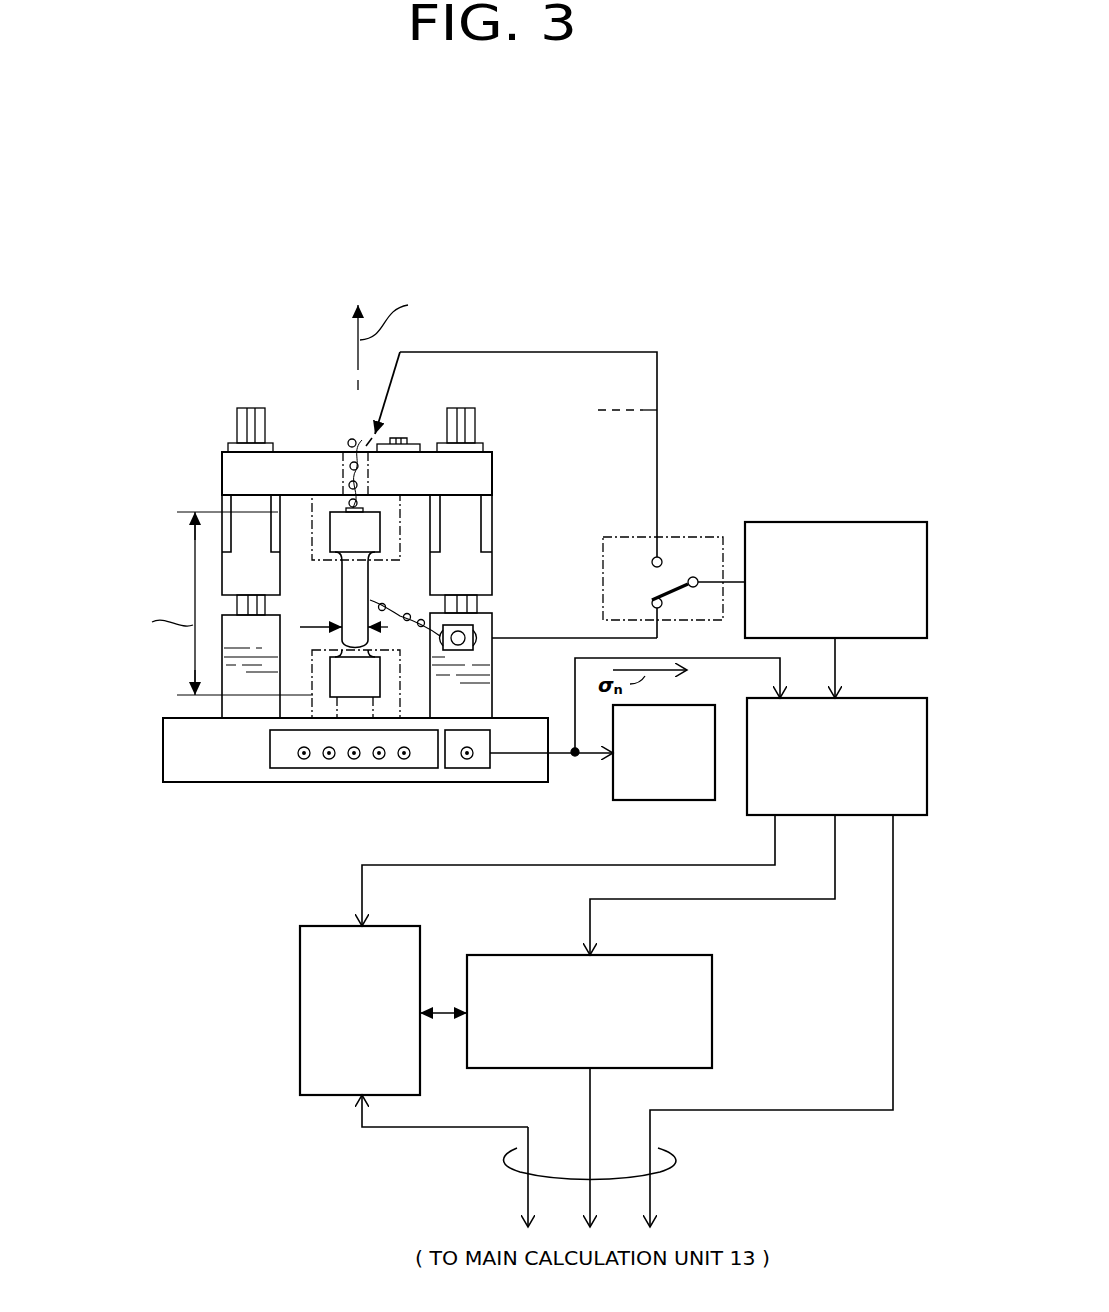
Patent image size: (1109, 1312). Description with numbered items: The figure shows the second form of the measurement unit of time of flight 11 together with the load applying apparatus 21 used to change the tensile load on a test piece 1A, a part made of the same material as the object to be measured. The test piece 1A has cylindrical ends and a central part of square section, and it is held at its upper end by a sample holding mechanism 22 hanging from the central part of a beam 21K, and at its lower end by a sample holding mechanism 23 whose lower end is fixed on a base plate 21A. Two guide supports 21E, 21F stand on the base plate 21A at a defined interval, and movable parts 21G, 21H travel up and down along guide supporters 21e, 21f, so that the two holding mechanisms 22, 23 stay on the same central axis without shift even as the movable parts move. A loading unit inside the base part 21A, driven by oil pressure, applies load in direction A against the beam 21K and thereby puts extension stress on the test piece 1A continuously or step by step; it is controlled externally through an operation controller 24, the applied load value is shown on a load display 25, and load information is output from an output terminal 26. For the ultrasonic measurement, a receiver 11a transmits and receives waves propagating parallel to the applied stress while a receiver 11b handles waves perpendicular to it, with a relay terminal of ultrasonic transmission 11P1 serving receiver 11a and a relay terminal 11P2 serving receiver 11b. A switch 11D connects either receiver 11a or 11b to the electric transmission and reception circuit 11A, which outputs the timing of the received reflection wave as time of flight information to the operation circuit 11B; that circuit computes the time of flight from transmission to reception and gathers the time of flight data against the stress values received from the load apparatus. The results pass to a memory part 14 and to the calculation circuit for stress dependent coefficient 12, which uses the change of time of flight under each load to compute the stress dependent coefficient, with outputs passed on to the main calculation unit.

The load applying apparatus 21 is at (507, 408).
The beam 21K is at (222, 470).
The movable part 21G is at (222, 543).
The movable part 21H is at (492, 512).
The guide supporter 21e is at (237, 608).
The guide supporter 21f is at (477, 608).
The guide support 21E is at (222, 662).
The base plate 21A is at (188, 763).
The operation controller 24 is at (287, 762).
The output terminal 26 is at (467, 762).
The guide support 21F is at (492, 687).
The sample holding mechanism 22 is at (310, 527).
The sample holding mechanism 23 is at (310, 683).
The test piece 1A is at (363, 540).
The measurement unit of time of flight 11 is at (950, 420).
The receiver 11a is at (347, 507).
The receiver 11b is at (372, 600).
The relay terminal of ultrasonic transmission 11P1 is at (380, 444).
The relay terminal 11P2 is at (480, 640).
The switch 11D is at (678, 537).
The electric transmission and reception circuit 11A is at (885, 522).
The operation circuit 11B is at (907, 698).
The load display 25 is at (642, 800).
The memory part 14 is at (300, 963).
The calculation circuit for stress dependent coefficient 12 is at (713, 985).